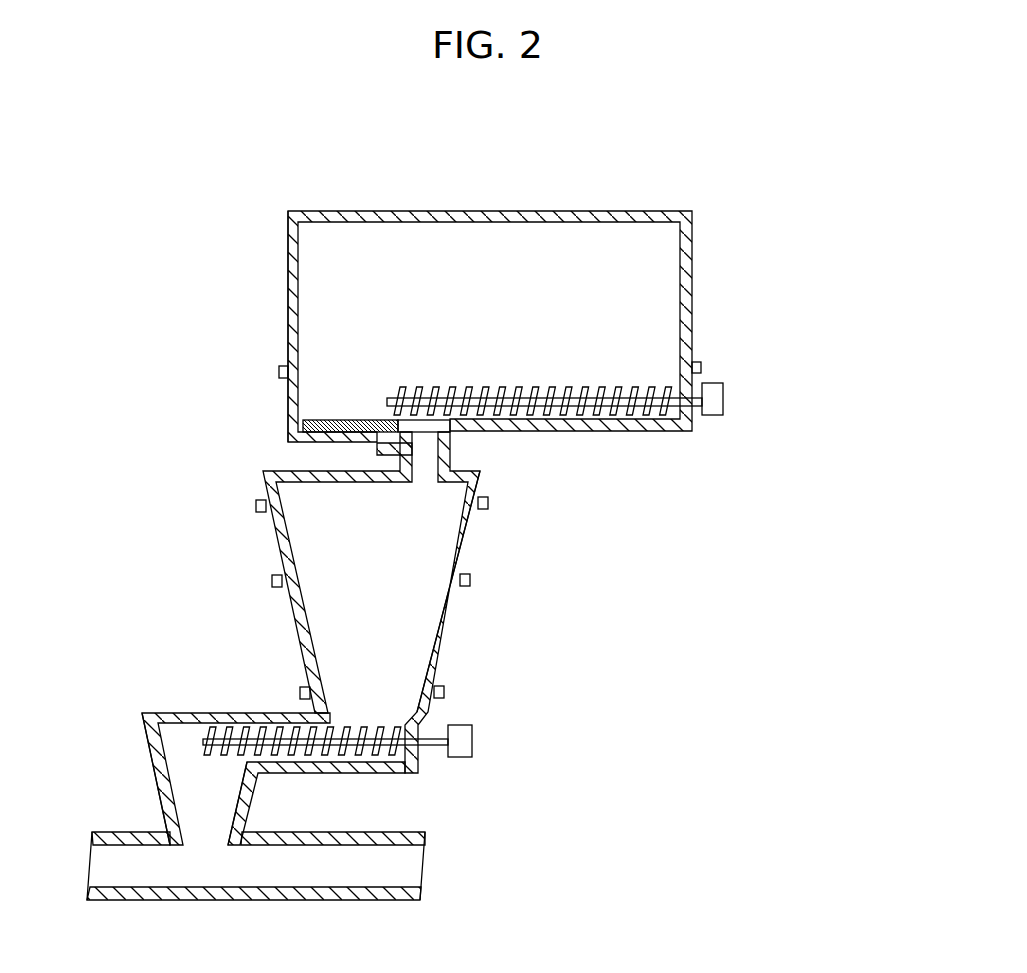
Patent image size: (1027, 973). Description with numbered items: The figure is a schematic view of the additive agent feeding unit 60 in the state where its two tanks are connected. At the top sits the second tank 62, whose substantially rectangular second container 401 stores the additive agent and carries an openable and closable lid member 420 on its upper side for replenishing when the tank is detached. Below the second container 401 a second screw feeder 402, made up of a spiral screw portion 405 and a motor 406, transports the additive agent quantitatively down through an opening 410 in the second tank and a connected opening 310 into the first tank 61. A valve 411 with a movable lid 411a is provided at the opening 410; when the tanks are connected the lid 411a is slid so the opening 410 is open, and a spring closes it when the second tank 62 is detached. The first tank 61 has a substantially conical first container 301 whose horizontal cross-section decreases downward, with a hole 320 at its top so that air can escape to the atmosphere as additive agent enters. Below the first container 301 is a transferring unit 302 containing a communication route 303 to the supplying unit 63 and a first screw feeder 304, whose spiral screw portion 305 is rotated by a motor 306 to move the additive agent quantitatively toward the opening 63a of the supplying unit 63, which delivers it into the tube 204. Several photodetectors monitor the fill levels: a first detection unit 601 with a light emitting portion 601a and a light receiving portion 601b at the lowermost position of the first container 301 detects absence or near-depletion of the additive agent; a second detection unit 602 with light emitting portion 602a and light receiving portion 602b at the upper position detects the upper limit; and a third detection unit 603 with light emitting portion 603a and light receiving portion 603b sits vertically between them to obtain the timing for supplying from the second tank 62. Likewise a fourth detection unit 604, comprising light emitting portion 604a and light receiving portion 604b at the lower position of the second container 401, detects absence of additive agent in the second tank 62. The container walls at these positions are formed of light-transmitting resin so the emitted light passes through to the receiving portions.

The additive agent feeding unit 60 is at (236, 205).
The first tank 61 is at (258, 548).
The second tank 62 is at (285, 278).
The supplying unit 63 is at (203, 826).
The opening 63a is at (235, 808).
The tube 204 is at (150, 880).
The first container 301 is at (453, 640).
The transferring unit 302 is at (358, 723).
The communication route 303 is at (190, 712).
The first screw feeder 304 is at (385, 723).
The screw portion 305 is at (395, 760).
The motor 306 is at (475, 742).
The opening 310 is at (431, 458).
The hole 320 is at (290, 470).
The second container 401 is at (697, 298).
The second screw feeder 402 is at (585, 388).
The screw portion 405 is at (616, 431).
The motor 406 is at (725, 400).
The opening 410 is at (428, 448).
The valve 411 is at (388, 411).
The lid 411a is at (345, 418).
The lid member 420 is at (540, 210).
The first detection unit 601 is at (552, 666).
The light emitting portion 601a is at (444, 692).
The light receiving portion 601b is at (300, 693).
The second detection unit 602 is at (589, 492).
The light emitting portion 602a is at (488, 503).
The light receiving portion 602b is at (258, 506).
The third detection unit 603 is at (569, 571).
The light emitting portion 603a is at (470, 580).
The light receiving portion 603b is at (272, 582).
The fourth detection unit 604 is at (806, 347).
The light emitting portion 604a is at (703, 367).
The light receiving portion 604b is at (279, 372).